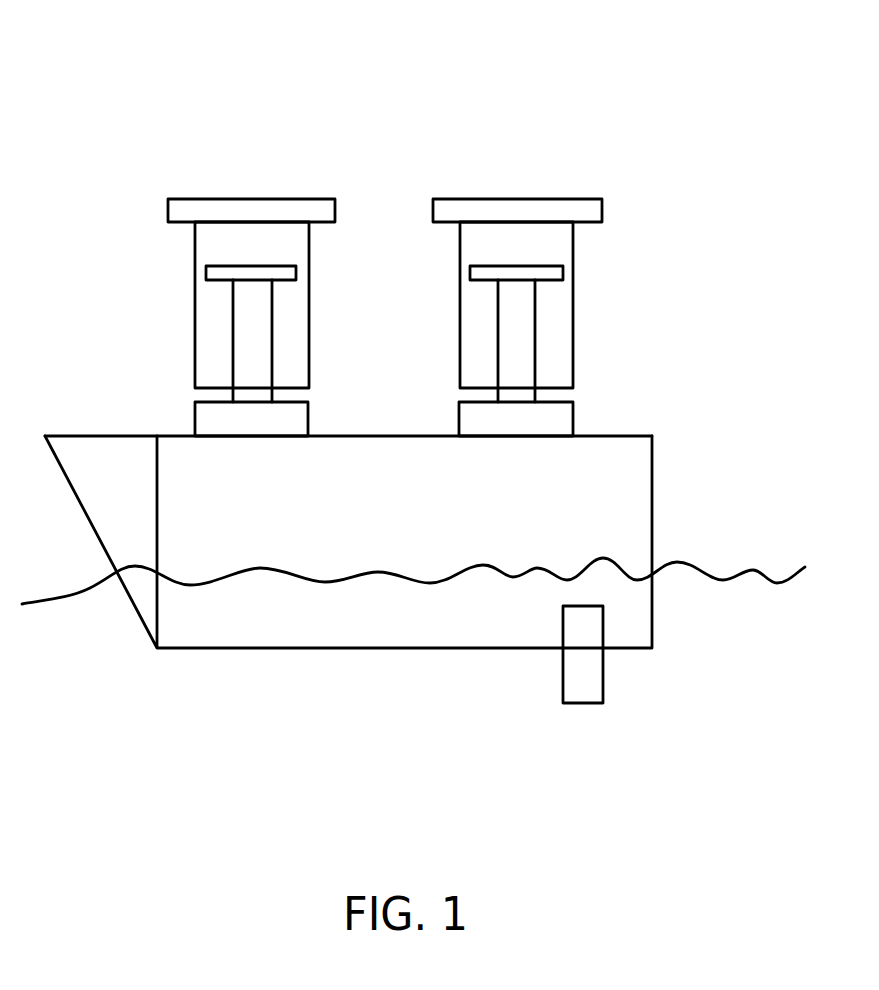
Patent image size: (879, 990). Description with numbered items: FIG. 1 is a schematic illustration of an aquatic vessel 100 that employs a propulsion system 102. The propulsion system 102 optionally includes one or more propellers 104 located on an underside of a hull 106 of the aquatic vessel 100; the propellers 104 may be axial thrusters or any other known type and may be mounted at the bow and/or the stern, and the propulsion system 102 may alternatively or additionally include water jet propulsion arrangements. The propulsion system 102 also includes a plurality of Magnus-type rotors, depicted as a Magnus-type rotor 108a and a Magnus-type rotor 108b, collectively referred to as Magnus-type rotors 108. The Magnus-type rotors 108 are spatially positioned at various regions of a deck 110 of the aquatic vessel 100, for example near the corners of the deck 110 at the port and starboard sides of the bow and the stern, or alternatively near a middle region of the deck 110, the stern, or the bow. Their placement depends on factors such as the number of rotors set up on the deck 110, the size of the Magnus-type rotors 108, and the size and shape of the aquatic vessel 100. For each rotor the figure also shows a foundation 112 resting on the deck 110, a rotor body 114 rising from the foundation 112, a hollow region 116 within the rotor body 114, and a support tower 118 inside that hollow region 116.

The aquatic vessel 100 is at (737, 235).
The propulsion system 102 is at (125, 156).
The propeller 104 is at (603, 680).
The hull 106 is at (130, 605).
The Magnus-type rotors 108 is at (320, 146).
The Magnus-type rotor 108a is at (190, 198).
The Magnus-type rotor 108b is at (517, 198).
The deck 110 is at (355, 437).
The foundation 112 is at (202, 422).
The rotor body 114 is at (310, 287).
The hollow region 116 is at (562, 238).
The support tower 118 is at (535, 352).